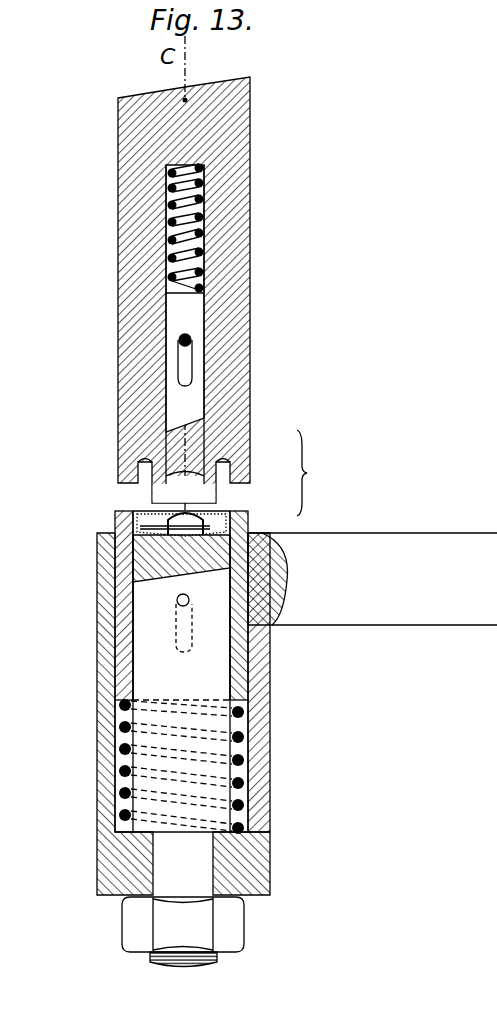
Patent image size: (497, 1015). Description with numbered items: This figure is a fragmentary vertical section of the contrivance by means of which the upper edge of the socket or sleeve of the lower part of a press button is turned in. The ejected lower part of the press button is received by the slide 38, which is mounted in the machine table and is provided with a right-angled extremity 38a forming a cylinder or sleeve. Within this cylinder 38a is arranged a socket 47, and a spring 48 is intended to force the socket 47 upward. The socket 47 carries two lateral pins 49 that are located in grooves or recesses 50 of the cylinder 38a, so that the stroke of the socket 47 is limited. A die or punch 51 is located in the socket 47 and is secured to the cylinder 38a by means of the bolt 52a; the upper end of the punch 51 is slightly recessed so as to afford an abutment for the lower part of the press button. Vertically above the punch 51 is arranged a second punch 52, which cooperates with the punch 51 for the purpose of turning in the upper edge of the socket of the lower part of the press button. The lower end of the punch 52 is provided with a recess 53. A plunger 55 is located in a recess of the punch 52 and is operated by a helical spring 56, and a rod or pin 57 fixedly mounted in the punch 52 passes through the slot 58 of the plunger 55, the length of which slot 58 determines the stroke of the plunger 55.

The slide 38 is at (424, 626).
The right-angled extremity 38a is at (117, 705).
The socket 47 is at (121, 676).
The spring 48 is at (248, 740).
The lateral pins 49 is at (189, 601).
The grooves 50 is at (178, 625).
The die or punch 51 is at (228, 671).
The punch 52 is at (240, 372).
The bolt 52a is at (218, 962).
The recess 53 is at (228, 464).
The plunger 55 is at (170, 402).
The helical spring 56 is at (200, 223).
The rod or pin 57 is at (190, 339).
The slot 58 is at (181, 358).